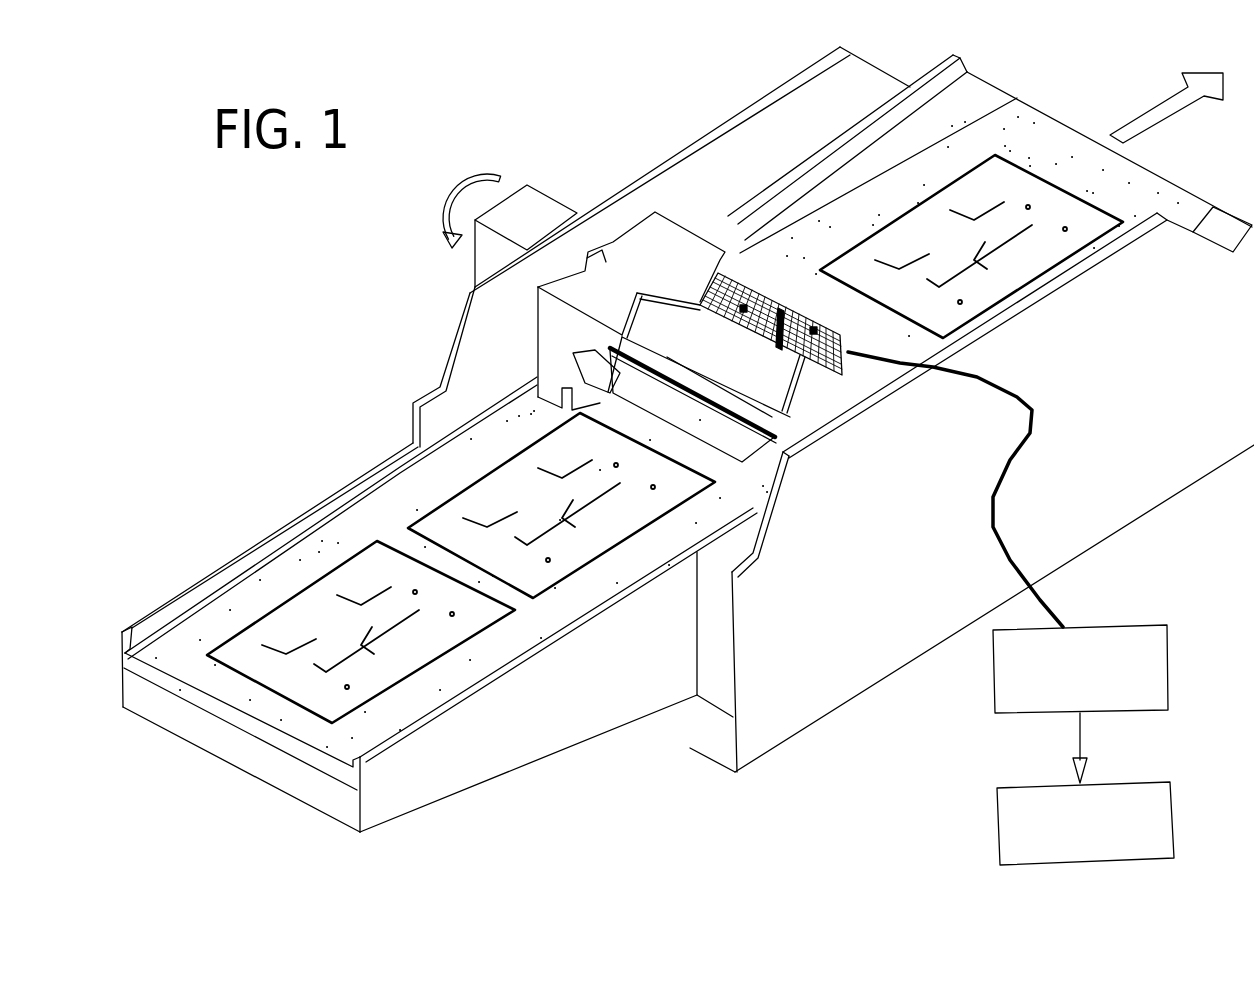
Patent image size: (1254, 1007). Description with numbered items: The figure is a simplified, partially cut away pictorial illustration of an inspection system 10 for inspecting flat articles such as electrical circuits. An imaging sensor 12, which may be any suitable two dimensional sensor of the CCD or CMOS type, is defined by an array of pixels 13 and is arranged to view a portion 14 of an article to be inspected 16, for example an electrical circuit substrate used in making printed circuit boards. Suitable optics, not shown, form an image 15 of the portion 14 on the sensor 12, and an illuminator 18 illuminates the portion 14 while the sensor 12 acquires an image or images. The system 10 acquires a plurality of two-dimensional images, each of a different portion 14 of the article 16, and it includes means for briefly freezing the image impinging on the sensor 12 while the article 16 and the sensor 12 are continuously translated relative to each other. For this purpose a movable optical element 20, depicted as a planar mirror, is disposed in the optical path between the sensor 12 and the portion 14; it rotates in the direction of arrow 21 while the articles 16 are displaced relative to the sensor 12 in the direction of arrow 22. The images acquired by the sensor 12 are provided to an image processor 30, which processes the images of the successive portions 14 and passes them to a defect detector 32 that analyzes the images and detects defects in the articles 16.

The inspection system 10 is at (310, 303).
The imaging sensor 12 is at (742, 262).
The array of pixels 13 is at (848, 352).
The portion of an article to be inspected 14 is at (813, 410).
The image 15 is at (810, 340).
The article to be inspected 16 is at (450, 530).
The illuminator 18 is at (596, 352).
The movable optical element 20 is at (659, 326).
The arrow 21 is at (453, 197).
The arrow 22 is at (1167, 115).
The image processor 30 is at (1133, 625).
The defect detector 32 is at (1131, 786).